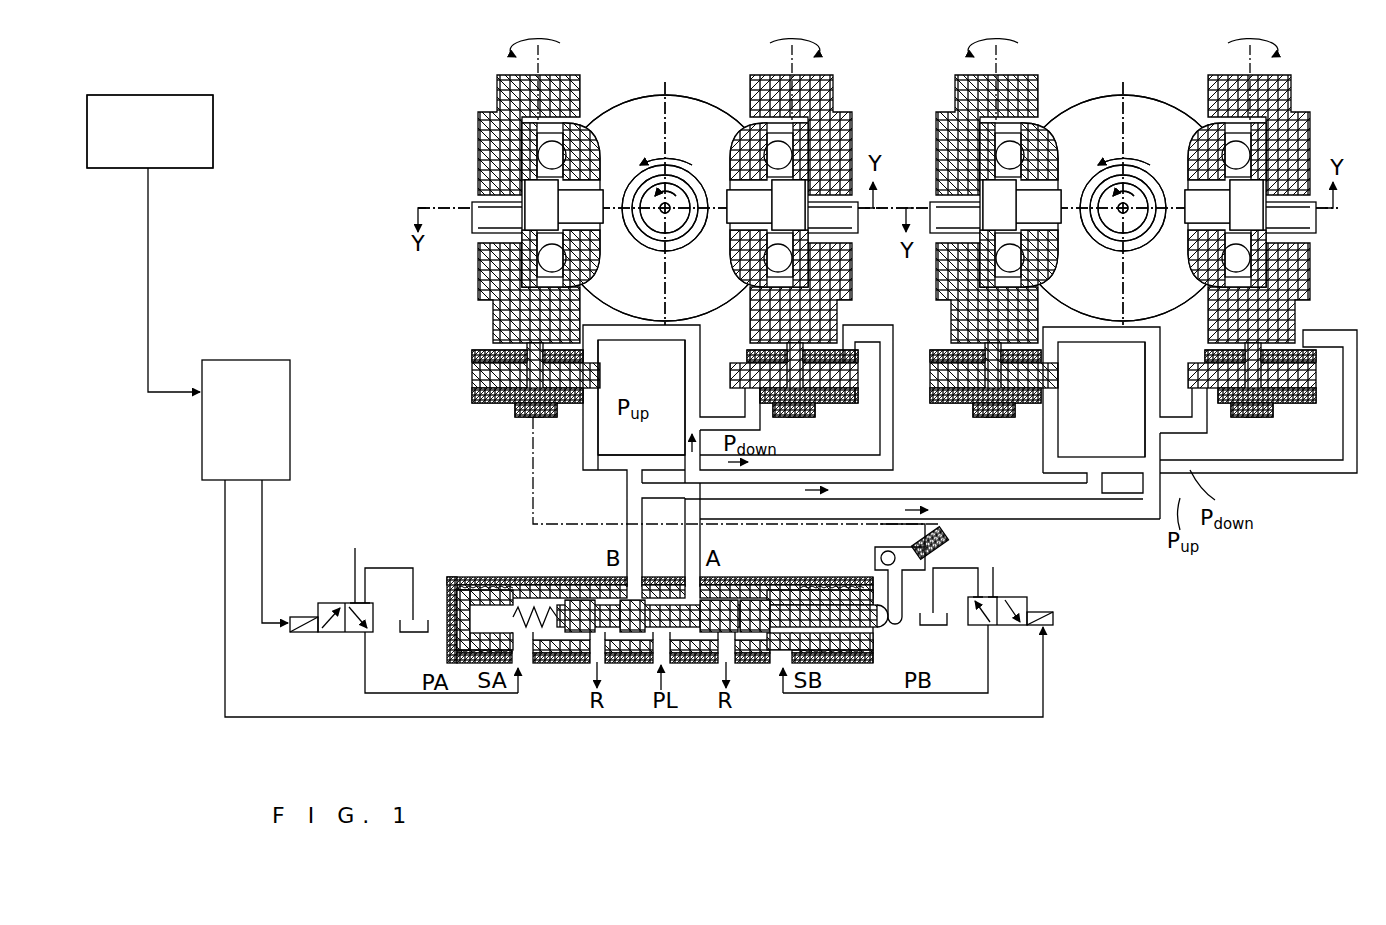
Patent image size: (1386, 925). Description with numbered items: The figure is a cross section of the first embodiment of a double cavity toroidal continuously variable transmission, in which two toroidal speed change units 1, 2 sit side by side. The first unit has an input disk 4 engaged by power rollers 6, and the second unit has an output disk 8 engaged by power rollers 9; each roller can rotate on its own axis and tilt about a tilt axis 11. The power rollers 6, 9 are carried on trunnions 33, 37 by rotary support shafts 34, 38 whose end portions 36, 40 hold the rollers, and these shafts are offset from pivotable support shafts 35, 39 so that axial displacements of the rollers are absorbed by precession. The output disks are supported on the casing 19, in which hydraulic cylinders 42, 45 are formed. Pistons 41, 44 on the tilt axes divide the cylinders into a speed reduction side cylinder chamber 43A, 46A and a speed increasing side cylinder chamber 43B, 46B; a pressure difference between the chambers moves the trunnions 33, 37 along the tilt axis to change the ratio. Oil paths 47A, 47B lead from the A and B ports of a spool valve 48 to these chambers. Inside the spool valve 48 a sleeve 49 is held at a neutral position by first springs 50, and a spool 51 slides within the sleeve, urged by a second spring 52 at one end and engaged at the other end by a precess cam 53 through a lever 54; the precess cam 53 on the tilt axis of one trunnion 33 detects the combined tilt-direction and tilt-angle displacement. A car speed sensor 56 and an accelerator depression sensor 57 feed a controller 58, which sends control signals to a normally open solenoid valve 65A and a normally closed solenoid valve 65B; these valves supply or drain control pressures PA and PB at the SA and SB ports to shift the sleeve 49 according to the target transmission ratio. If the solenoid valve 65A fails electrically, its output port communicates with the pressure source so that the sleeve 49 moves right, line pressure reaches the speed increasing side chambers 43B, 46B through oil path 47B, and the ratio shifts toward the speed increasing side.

The toroidal speed change unit 1 is at (637, 90).
The toroidal speed change unit 2 is at (1100, 86).
The input disk 4 is at (681, 118).
The power rollers 6 is at (590, 130).
The output disk 8 is at (1142, 128).
The power rollers 9 is at (1047, 132).
The tilt axis 11 is at (518, 52).
The casing 19 is at (565, 405).
The trunnion 33 is at (510, 95).
The rotary support shaft 34 is at (532, 195).
The pivotable support shaft 35 is at (490, 222).
The end portion 36 is at (595, 180).
The trunnion 37 is at (968, 97).
The rotary support shaft 38 is at (990, 195).
The pivotable support shaft 39 is at (948, 222).
The end portion 40 is at (1055, 180).
The piston 41 is at (480, 375).
The hydraulic cylinder 42 is at (465, 390).
The speed reduction side cylinder chamber 43A is at (502, 352).
The speed increasing side cylinder chamber 43B is at (512, 412).
The piston 44 is at (948, 375).
The hydraulic cylinder 45 is at (930, 392).
The speed reduction side cylinder chamber 46A is at (960, 352).
The speed increasing side cylinder chamber 46B is at (978, 412).
The oil path 47A is at (685, 376).
The oil path 47B is at (598, 440).
The spool valve 48 is at (524, 575).
The sleeve 49 is at (575, 600).
The first springs 50 is at (478, 590).
The spool 51 is at (750, 600).
The second spring 52 is at (545, 632).
The precess cam 53 is at (945, 546).
The lever 54 is at (903, 582).
The car speed sensor 56 is at (150, 131).
The accelerator depression sensor 57 is at (150, 131).
The controller 58 is at (290, 421).
The solenoid valve 65A is at (330, 603).
The solenoid valve 65B is at (1014, 620).